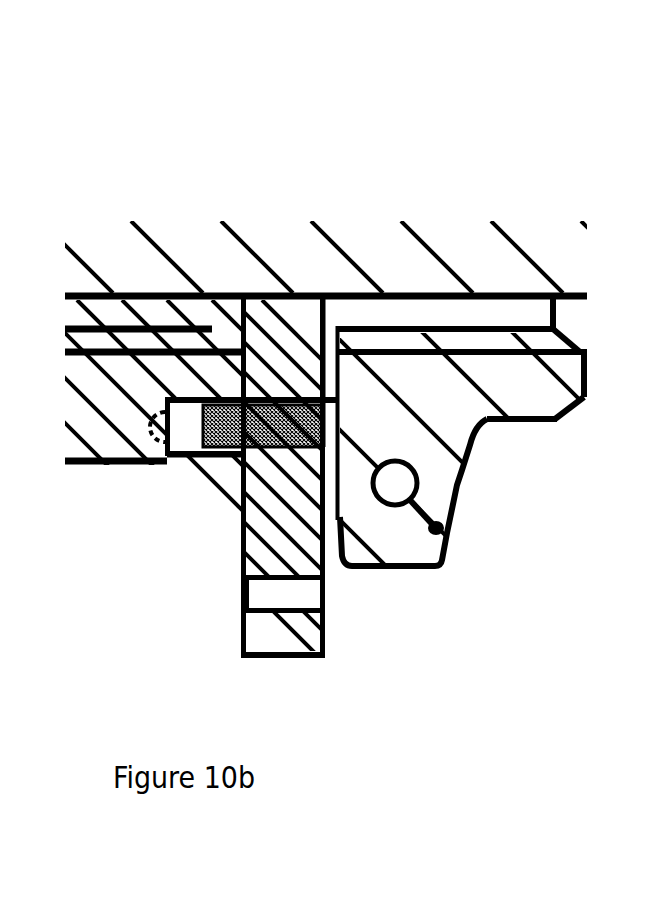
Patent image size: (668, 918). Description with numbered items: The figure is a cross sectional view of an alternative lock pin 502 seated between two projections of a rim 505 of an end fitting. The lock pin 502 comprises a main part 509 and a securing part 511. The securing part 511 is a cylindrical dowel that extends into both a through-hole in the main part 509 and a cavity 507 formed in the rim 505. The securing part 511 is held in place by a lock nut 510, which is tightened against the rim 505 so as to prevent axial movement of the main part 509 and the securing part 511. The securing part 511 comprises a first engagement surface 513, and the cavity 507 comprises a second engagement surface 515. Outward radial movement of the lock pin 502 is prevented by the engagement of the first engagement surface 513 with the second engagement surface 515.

The lock pin 502 is at (303, 680).
The rim 505 is at (110, 377).
The cavity 507 is at (185, 428).
The main part 509 is at (288, 543).
The lock nut 510 is at (455, 423).
The securing part 511 is at (320, 452).
The first engagement surface 513 is at (230, 453).
The second engagement surface 515 is at (207, 453).